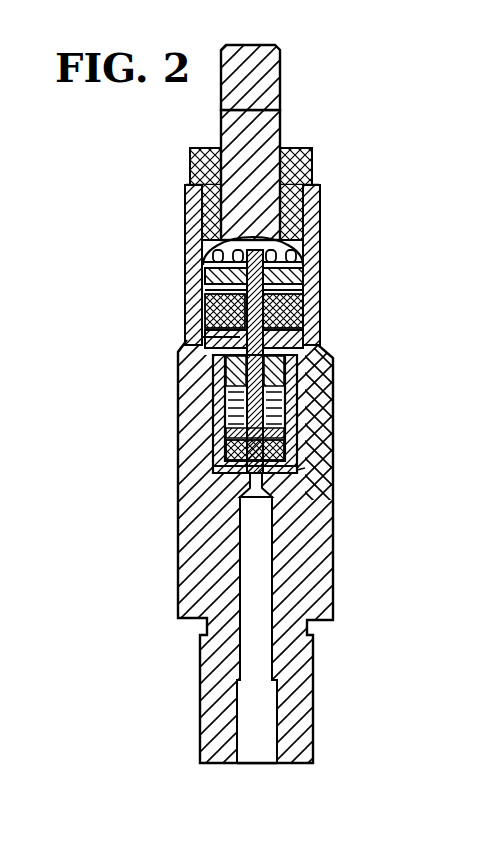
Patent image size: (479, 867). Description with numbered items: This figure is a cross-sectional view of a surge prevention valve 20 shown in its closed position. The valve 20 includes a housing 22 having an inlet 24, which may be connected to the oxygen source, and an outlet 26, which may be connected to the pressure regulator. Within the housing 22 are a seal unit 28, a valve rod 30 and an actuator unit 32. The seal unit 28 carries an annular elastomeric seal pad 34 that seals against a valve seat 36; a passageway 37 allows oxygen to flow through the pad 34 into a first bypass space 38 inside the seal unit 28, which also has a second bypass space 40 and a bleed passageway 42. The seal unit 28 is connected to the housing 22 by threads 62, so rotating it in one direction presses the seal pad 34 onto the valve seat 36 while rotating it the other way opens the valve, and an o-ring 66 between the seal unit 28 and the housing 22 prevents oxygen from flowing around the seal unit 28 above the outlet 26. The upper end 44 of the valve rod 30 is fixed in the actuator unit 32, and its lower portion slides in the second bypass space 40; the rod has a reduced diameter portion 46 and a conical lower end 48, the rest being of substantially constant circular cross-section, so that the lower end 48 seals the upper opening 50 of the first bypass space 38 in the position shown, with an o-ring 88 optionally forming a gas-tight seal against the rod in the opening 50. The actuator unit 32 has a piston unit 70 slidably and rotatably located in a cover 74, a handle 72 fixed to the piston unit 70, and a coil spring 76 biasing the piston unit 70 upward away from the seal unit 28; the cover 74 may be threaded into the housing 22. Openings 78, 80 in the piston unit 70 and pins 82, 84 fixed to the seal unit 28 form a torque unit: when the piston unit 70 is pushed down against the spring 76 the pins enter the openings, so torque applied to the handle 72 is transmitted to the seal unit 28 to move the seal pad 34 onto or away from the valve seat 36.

The valve 20 is at (358, 219).
The housing 22 is at (303, 580).
The inlet 24 is at (259, 738).
The outlet 26 is at (205, 438).
The seal unit 28 is at (329, 360).
The valve rod 30 is at (300, 304).
The actuator unit 32 is at (310, 164).
The seal pad 34 is at (305, 468).
The valve seat 36 is at (300, 496).
The passageway 37 is at (245, 495).
The first bypass space 38 is at (298, 452).
The second bypass space 40 is at (300, 395).
The bleed passageway 42 is at (185, 356).
The upper end 44 is at (300, 261).
The reduced diameter portion 46 is at (203, 337).
The conical lower end 48 is at (222, 395).
The upper opening 50 is at (217, 415).
The threads 62 is at (215, 470).
The o-ring 66 is at (216, 385).
The piston unit 70 is at (258, 140).
The handle 72 is at (258, 88).
The cover 74 is at (210, 165).
The coil spring 76 is at (237, 293).
The opening 78 is at (208, 273).
The opening 80 is at (210, 233).
The pin 82 is at (213, 314).
The pin 84 is at (300, 335).
The o-ring 88 is at (305, 423).